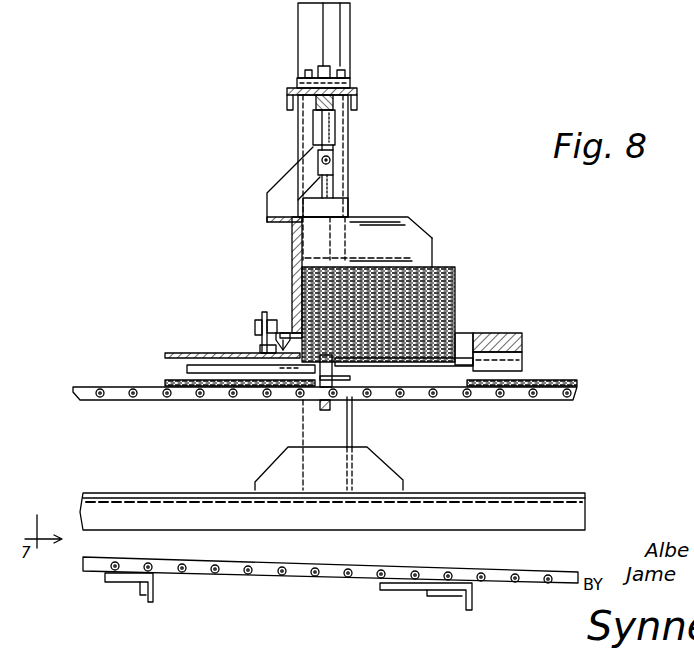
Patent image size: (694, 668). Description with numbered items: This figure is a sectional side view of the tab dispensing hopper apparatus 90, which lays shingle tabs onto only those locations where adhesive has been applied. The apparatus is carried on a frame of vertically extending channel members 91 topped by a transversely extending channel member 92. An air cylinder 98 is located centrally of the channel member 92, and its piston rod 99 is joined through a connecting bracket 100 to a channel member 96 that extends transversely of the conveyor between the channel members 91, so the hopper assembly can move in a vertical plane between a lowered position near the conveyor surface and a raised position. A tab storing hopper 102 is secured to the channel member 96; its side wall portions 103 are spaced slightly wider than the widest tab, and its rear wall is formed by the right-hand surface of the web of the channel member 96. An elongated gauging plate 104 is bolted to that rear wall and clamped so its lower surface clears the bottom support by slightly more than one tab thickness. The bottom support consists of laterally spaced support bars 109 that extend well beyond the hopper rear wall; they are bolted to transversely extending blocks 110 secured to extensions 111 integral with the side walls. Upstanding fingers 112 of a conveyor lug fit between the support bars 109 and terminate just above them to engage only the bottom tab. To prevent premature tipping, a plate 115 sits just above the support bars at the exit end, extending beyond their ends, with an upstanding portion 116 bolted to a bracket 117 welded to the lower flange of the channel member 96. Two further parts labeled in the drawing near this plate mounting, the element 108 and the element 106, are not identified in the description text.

The air cylinder 98 is at (340, 38).
The transversely extending channel member 92 is at (360, 93).
The vertically extending channel members 91 is at (350, 143).
The piston rod 99 is at (318, 132).
The connecting bracket 100 is at (285, 177).
The channel member 96 is at (297, 225).
The tab dispensing hopper apparatus 90 is at (389, 276).
The tab storing hoppers 102 is at (431, 232).
The side wall portions 103 is at (422, 253).
The gauging plate 104 is at (302, 252).
The bracket 117 is at (283, 312).
The upstanding portion 116 is at (263, 318).
The clamp bracket 108 is at (256, 323).
The post foot 106 is at (267, 345).
The plate 115 is at (207, 352).
The support bars 109 is at (233, 365).
The upstanding fingers 112 is at (313, 398).
The extensions 111 is at (462, 333).
The transversely extending blocks 110 is at (500, 333).